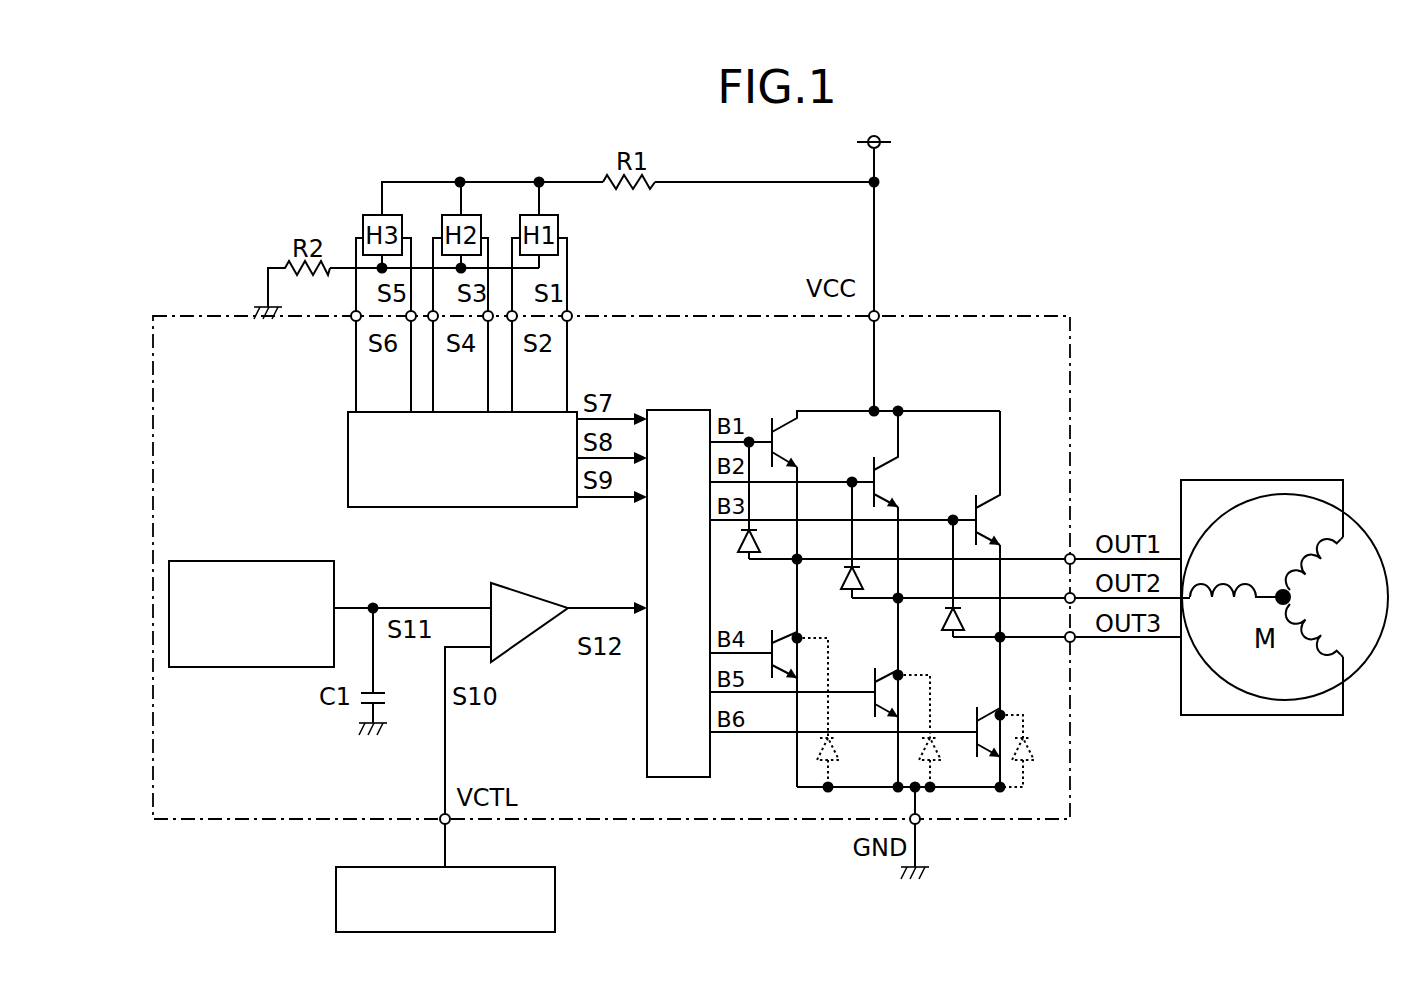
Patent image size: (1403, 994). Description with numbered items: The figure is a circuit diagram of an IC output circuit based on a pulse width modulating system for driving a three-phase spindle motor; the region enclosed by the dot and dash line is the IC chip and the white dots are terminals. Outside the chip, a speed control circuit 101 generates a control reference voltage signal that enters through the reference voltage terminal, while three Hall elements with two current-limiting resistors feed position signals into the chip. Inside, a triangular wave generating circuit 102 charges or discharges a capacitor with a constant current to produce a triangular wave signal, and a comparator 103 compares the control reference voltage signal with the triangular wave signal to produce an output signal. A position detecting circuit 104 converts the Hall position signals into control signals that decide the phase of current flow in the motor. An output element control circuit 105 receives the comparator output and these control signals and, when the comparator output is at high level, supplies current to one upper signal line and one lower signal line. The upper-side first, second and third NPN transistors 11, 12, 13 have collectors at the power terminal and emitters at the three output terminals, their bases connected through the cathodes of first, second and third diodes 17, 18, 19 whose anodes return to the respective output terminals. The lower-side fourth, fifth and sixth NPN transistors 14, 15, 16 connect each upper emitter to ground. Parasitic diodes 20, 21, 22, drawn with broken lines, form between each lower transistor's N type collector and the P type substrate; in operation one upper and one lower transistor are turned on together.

The first NPN transistor 11 is at (772, 418).
The second NPN transistor 12 is at (887, 490).
The third NPN transistor 13 is at (992, 530).
The fourth NPN transistor 14 is at (792, 634).
The fifth NPN transistor 15 is at (893, 672).
The sixth NPN transistor 16 is at (995, 712).
The first diode 17 is at (752, 550).
The second diode 18 is at (840, 576).
The third diode 19 is at (940, 615).
The parasitic diode 20 is at (815, 770).
The parasitic diode 21 is at (940, 765).
The parasitic diode 22 is at (1038, 750).
The speed control circuit 101 is at (505, 877).
The triangular wave generating circuit 102 is at (302, 561).
The comparator 103 is at (540, 612).
The position detecting circuit 104 is at (413, 507).
The output element control circuit 105 is at (678, 418).